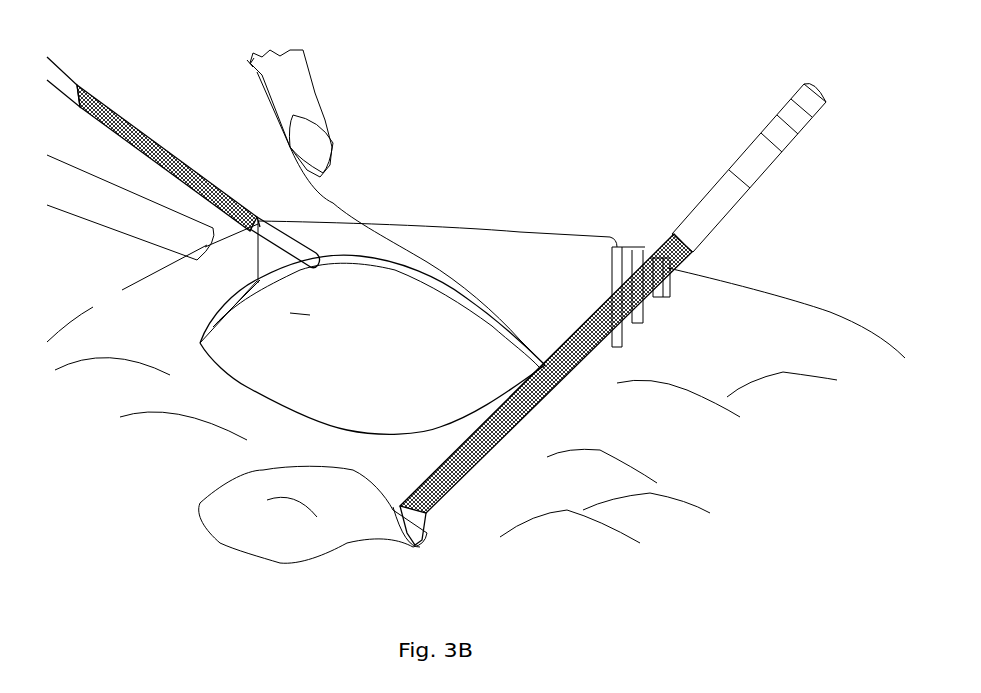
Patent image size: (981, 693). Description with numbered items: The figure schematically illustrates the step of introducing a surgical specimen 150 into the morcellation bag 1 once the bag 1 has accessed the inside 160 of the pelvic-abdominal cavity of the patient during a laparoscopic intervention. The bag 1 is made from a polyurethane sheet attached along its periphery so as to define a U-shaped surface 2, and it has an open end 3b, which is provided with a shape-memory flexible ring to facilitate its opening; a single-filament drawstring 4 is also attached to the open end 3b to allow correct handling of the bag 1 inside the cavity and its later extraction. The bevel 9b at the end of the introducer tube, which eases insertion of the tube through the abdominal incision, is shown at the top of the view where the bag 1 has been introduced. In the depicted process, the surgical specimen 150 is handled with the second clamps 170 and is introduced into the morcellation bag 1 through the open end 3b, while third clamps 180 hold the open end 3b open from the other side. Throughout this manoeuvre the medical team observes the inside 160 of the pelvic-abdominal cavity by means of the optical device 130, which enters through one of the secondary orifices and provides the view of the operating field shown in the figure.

The bag 1 is at (487, 212).
The U-shaped surface 2 is at (588, 242).
The second open end 3b is at (303, 372).
The single-filament drawstring 4 is at (317, 195).
The bevel 9b is at (317, 95).
The optical device 130 is at (117, 232).
The surgical specimen 150 is at (250, 518).
The inside of the pelvic-abdominal cavity 160 is at (693, 472).
The second clamps 170 is at (700, 223).
The third clamps 180 is at (193, 180).